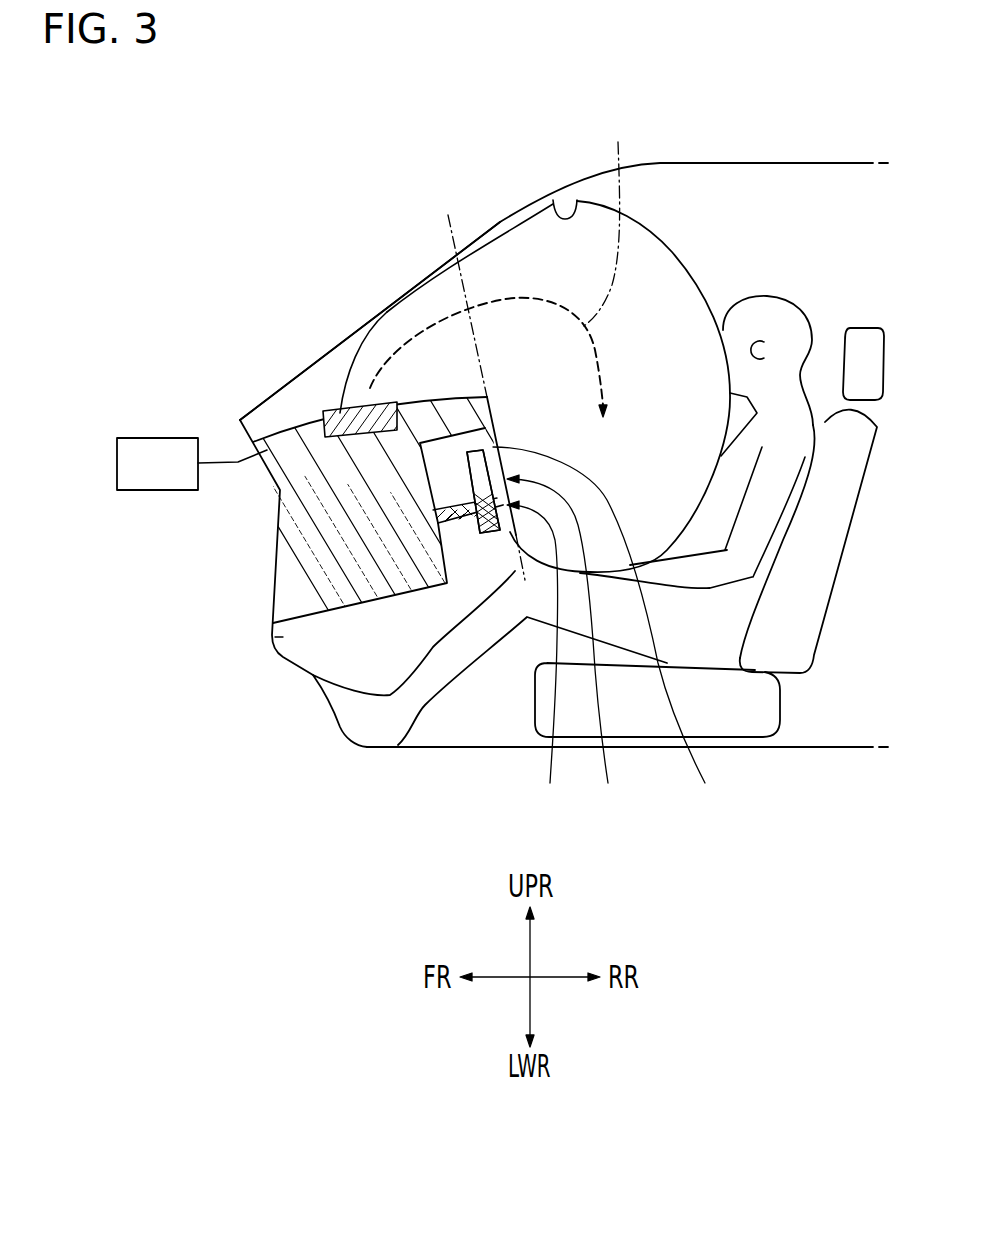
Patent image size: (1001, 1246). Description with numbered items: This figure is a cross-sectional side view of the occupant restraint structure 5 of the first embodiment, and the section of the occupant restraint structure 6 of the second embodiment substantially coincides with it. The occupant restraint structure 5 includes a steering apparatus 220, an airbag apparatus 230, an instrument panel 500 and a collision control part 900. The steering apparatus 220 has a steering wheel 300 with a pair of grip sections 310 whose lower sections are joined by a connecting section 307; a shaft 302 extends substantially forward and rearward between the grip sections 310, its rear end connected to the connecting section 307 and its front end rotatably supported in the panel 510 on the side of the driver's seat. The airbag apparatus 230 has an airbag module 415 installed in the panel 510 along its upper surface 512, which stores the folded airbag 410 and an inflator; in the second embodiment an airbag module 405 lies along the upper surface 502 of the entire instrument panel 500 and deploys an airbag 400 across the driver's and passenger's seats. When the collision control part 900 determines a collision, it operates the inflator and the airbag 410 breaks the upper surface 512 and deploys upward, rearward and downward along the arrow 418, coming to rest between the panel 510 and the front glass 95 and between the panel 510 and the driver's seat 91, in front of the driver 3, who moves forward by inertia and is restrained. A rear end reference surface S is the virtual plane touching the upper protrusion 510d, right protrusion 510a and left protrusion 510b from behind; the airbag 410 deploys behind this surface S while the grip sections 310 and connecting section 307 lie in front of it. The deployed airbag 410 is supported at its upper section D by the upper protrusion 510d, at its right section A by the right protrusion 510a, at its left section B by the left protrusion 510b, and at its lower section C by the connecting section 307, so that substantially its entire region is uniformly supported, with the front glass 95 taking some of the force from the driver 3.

The occupant restraint structure 5 is at (543, 241).
The occupant restraint structure 6 is at (250, 176).
The steering apparatus 220 is at (272, 630).
The airbag apparatus 230 is at (322, 397).
The steering wheel 300 is at (450, 486).
The shaft 302 is at (405, 538).
The connecting section 307 is at (480, 533).
The grip section 310 is at (467, 462).
The airbag 400 is at (653, 233).
The airbag 410 is at (558, 315).
The airbag module 405 is at (340, 405).
The airbag module 415 is at (311, 330).
The arrow 418 is at (613, 216).
The instrument panel 500 is at (437, 405).
The upper surface 502 is at (390, 408).
The panel on the side of the driver's seat 510 is at (370, 302).
The right protrusion 510a is at (622, 649).
The left protrusion 510b is at (622, 649).
The upper protrusion 510d is at (495, 397).
The upper surface 512 is at (359, 321).
The collision control part 900 is at (116, 463).
The front glass 95 is at (568, 198).
The driver's seat 91 is at (870, 327).
The driver 3 is at (765, 297).
The rear end reference surface S is at (483, 380).
The upper section D is at (542, 297).
The right section A is at (568, 663).
The left section B is at (568, 663).
The lower section C is at (532, 659).